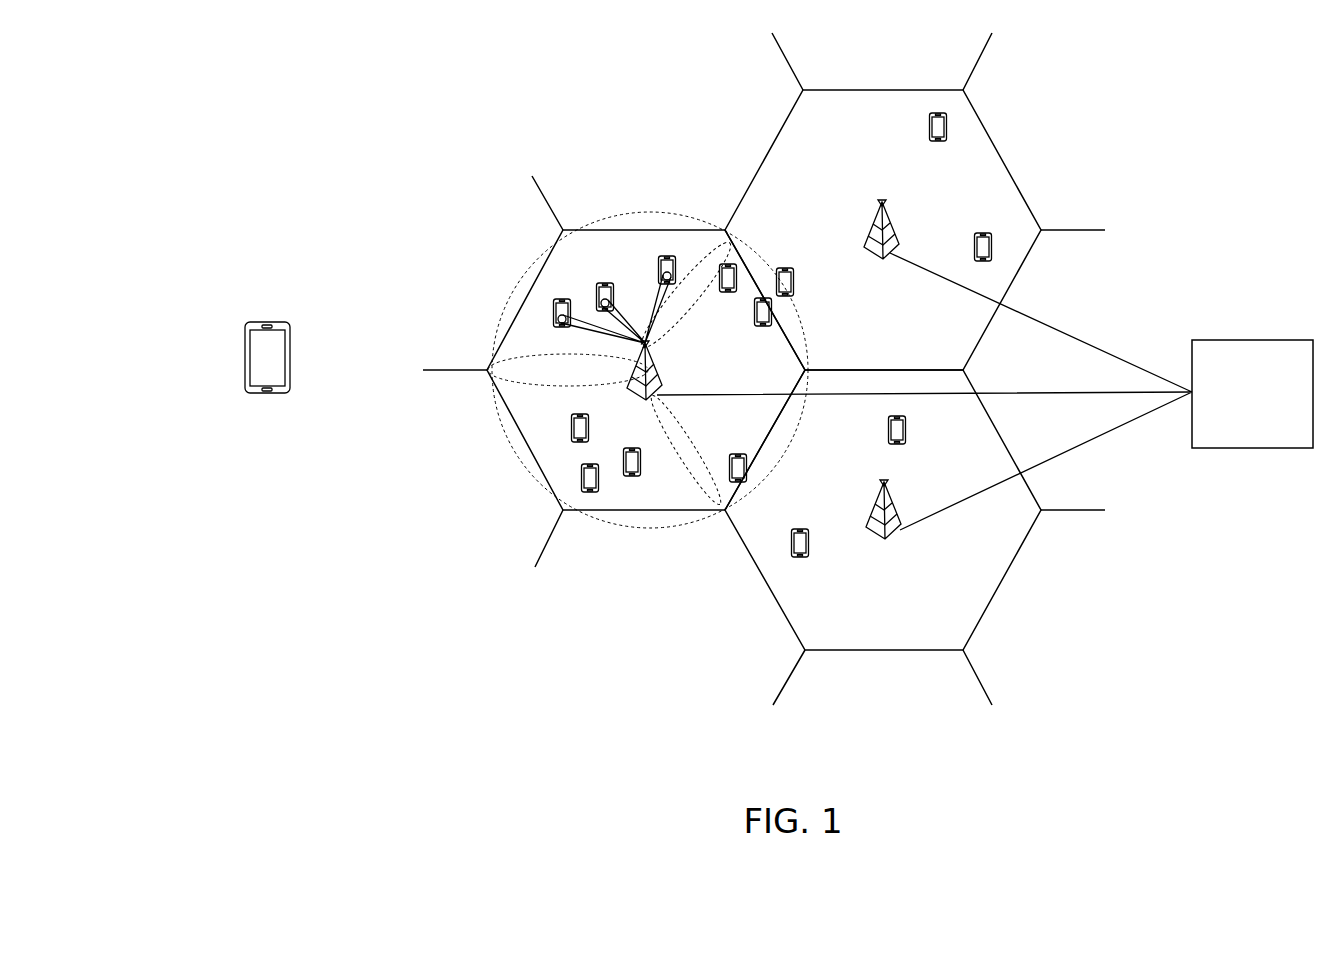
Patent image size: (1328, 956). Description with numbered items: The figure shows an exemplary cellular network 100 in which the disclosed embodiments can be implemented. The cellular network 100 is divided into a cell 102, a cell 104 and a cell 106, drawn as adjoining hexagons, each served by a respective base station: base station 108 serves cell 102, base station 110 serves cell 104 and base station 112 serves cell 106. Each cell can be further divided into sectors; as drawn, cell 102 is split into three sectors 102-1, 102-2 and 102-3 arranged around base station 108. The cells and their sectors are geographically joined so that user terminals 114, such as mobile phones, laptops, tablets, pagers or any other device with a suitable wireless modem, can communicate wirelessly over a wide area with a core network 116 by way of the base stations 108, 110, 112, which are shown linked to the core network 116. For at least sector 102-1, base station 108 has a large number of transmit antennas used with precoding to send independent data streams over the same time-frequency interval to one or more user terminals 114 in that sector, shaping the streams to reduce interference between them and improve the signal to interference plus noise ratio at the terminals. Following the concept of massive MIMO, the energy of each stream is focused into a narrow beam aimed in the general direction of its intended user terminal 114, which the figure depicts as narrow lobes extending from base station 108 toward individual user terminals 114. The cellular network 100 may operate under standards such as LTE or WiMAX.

The cellular network 100 is at (357, 733).
The cell 102 is at (520, 437).
The sector 102-1 is at (625, 212).
The sector 102-2 is at (793, 323).
The sector 102-3 is at (638, 528).
The cell 104 is at (1007, 570).
The cell 106 is at (1000, 146).
The base station 108 is at (655, 363).
The base station 110 is at (898, 503).
The base station 112 is at (897, 224).
The user terminal 114 is at (266, 322).
The core network 116 is at (985, 391).